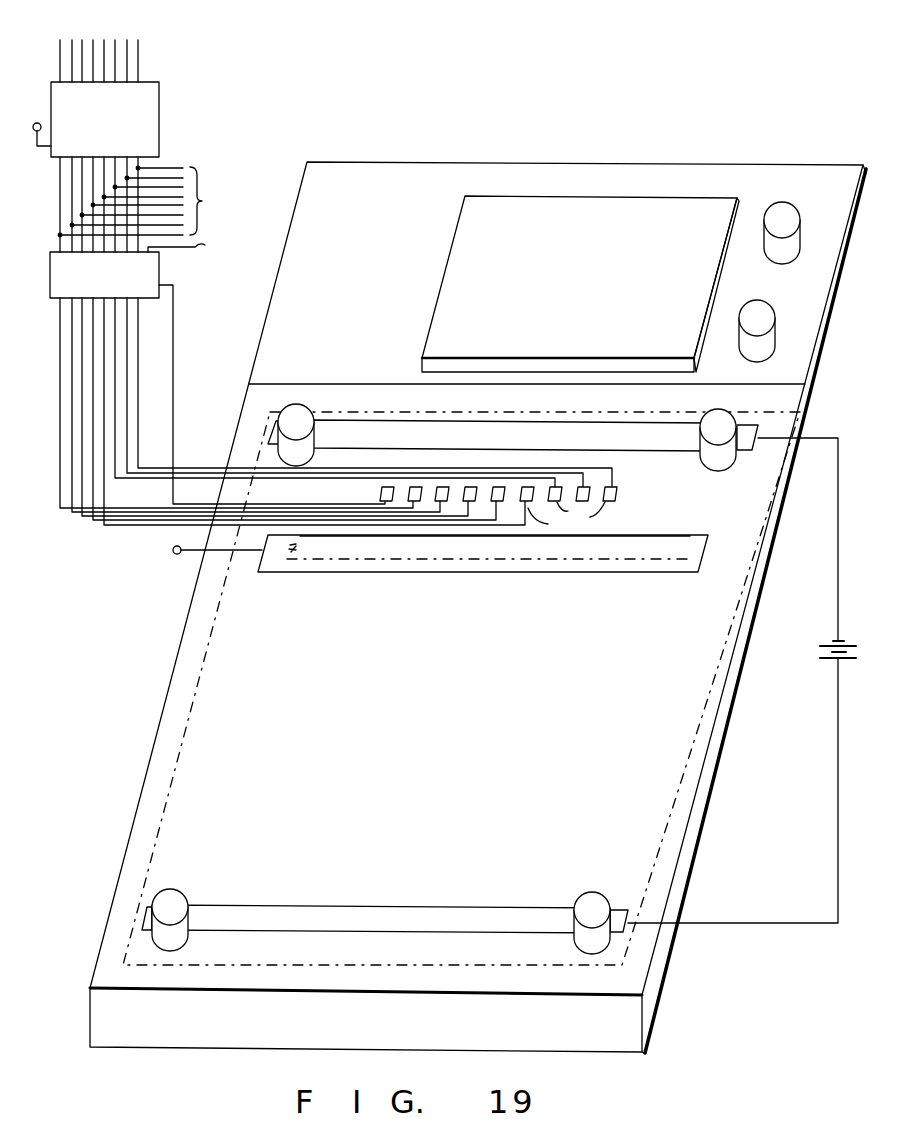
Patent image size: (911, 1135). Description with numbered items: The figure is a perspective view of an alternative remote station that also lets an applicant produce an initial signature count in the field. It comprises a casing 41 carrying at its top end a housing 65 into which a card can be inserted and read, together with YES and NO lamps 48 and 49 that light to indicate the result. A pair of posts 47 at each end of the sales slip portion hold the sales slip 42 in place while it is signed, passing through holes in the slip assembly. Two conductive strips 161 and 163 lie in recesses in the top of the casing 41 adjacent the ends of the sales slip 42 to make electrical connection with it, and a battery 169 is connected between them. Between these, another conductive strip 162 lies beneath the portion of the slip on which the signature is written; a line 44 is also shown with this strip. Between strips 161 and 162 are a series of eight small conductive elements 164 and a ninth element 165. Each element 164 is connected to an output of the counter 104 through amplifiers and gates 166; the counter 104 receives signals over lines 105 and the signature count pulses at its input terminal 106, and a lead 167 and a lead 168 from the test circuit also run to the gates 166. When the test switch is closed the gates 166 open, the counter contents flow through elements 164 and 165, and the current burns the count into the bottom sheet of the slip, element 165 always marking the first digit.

The casing 41 is at (160, 762).
The sales slip 42 is at (476, 415).
The indicator bar 44 is at (402, 560).
The posts 47 is at (298, 422).
The YES lamp 48 is at (782, 227).
The NO lamp 49 is at (757, 323).
The housing 65 is at (457, 265).
The counter 104 is at (153, 110).
The lines 105 is at (140, 40).
The input terminal 106 is at (32, 119).
The conductive strip 161 is at (628, 440).
The conductive strip 162 is at (508, 565).
The conductive strip 163 is at (352, 917).
The conductive elements 164 is at (566, 515).
The ninth conductive element 165 is at (382, 493).
The amplifiers and gates 166 is at (63, 285).
The test lead 167 is at (173, 377).
The test input lead 168 is at (199, 243).
The battery 169 is at (830, 650).